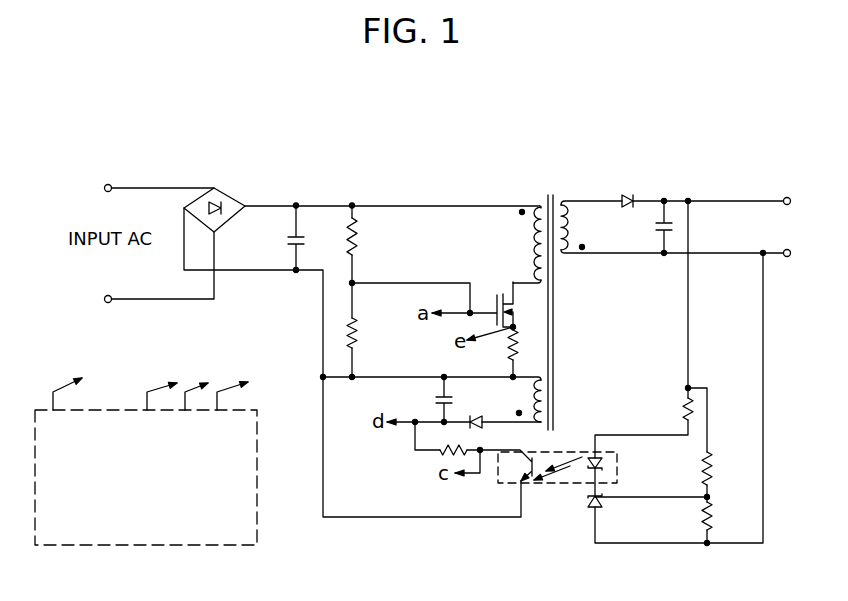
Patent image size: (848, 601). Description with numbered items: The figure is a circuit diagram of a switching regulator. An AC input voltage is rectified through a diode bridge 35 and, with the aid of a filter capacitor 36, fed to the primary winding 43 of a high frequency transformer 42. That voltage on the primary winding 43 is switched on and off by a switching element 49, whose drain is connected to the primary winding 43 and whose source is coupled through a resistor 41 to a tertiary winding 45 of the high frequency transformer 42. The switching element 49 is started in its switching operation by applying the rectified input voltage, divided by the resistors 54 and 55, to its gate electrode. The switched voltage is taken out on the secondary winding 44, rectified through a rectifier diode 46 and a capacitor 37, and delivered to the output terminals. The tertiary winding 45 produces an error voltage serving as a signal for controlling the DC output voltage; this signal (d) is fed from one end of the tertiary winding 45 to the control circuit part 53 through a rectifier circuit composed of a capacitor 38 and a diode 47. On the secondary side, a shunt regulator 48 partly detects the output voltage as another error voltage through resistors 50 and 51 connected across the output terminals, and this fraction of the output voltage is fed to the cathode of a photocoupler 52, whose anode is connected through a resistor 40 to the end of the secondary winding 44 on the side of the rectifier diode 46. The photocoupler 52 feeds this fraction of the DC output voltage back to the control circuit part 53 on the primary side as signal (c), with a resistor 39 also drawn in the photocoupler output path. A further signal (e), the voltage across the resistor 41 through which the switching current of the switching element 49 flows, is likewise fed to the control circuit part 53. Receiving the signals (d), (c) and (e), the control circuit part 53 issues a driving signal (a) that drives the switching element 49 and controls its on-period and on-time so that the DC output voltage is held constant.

The diode bridge 35 is at (217, 192).
The filter capacitor 36 is at (303, 240).
The capacitor 37 is at (673, 228).
The capacitor 38 is at (434, 400).
The resistor 39 is at (450, 456).
The resistor 40 is at (682, 410).
The resistor 41 is at (518, 342).
The high frequency transformer 42 is at (550, 195).
The primary winding 43 is at (534, 240).
The secondary winding 44 is at (576, 227).
The tertiary winding 45 is at (530, 400).
The rectifier diode 46 is at (632, 195).
The diode 47 is at (474, 416).
The shunt regulator 48 is at (589, 499).
The switching element 49 is at (514, 306).
The resistor 50 is at (712, 472).
The resistor 51 is at (712, 517).
The photocoupler 52 is at (596, 450).
The control circuit part 53 is at (258, 512).
The resistor 54 is at (358, 235).
The resistor 55 is at (360, 328).